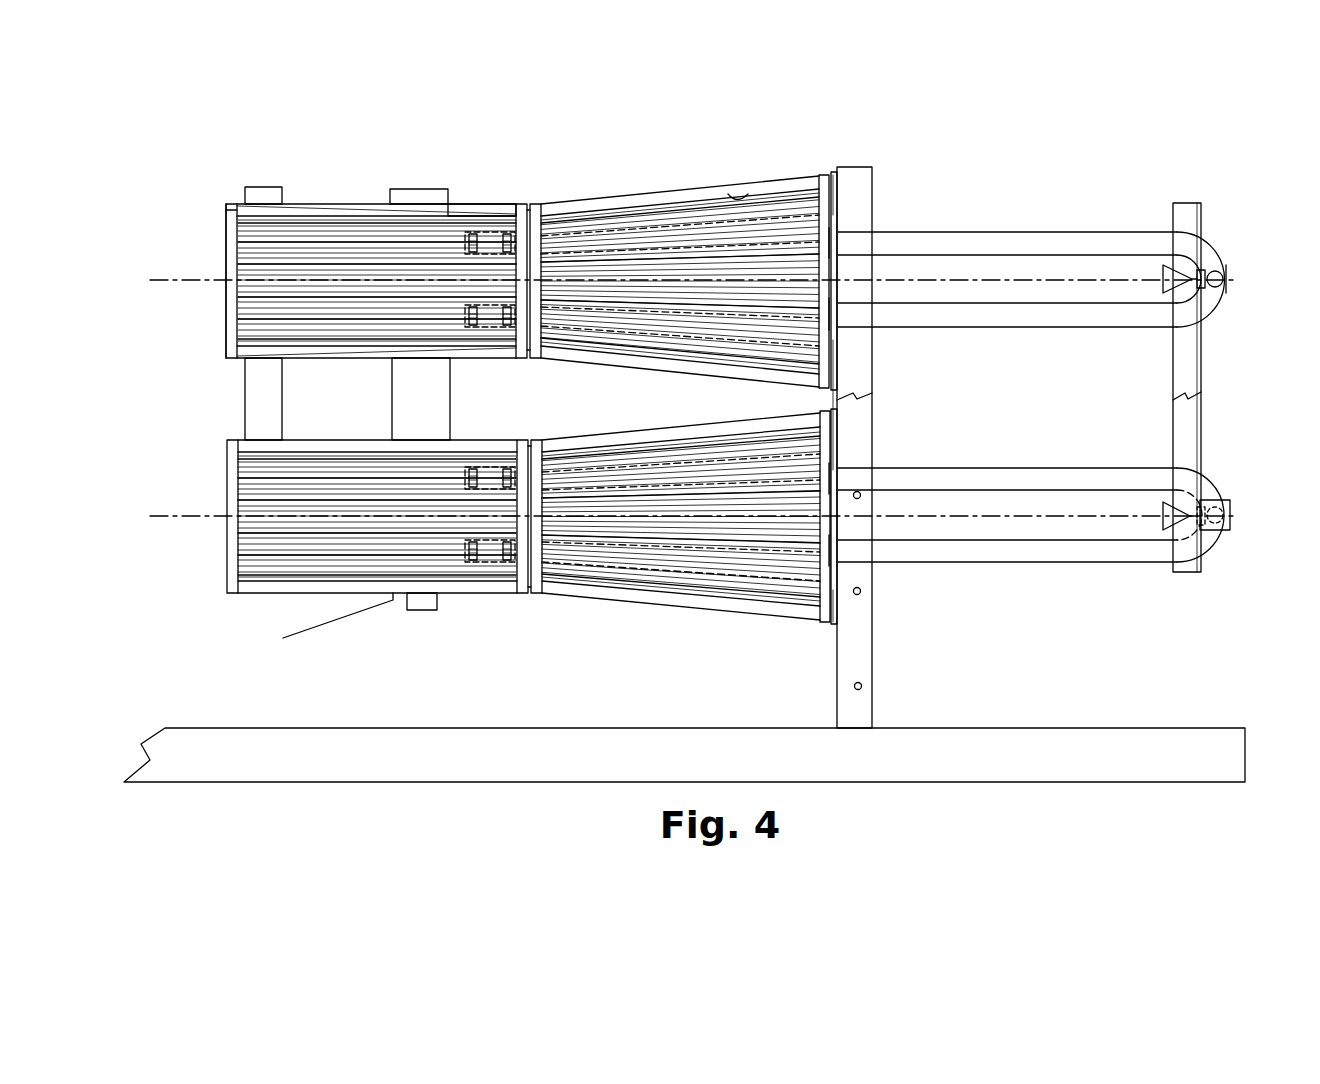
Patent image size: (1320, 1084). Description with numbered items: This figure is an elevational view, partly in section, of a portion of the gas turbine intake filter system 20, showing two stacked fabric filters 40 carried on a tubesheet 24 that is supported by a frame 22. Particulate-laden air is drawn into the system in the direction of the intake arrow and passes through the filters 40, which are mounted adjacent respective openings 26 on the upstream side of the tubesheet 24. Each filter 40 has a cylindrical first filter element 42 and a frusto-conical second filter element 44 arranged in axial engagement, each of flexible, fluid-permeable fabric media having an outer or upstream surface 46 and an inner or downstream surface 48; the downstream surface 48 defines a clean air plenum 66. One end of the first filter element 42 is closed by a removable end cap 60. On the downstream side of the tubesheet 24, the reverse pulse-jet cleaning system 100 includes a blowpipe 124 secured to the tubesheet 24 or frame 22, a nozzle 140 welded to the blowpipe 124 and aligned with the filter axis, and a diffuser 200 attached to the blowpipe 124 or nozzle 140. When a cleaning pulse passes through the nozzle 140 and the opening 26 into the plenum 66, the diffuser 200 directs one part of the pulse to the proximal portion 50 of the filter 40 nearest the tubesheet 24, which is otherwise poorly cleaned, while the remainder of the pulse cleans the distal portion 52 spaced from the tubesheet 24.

The gas turbine intake filter system 20 is at (828, 160).
The frame 22 is at (905, 740).
The tubesheet 24 is at (836, 673).
The openings 26 is at (838, 194).
The fabric filter 40 is at (532, 203).
The first filter element 42 is at (323, 203).
The second filter element 44 is at (665, 186).
The outer or upstream surface 46 is at (470, 204).
The inner or downstream surface 48 is at (736, 196).
The proximal portion 50 is at (793, 176).
The distal portion 52 is at (375, 203).
The removable end cap 60 is at (235, 233).
The clean air plenum 66 is at (448, 397).
The reverse pulse-jet cleaning system 100 is at (1260, 395).
The blowpipe 124 is at (1025, 322).
The nozzle 140 is at (1210, 312).
The diffuser 200 is at (1190, 272).